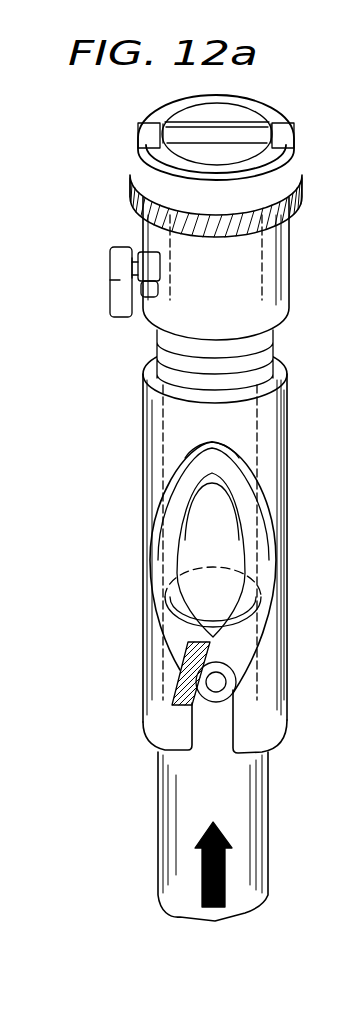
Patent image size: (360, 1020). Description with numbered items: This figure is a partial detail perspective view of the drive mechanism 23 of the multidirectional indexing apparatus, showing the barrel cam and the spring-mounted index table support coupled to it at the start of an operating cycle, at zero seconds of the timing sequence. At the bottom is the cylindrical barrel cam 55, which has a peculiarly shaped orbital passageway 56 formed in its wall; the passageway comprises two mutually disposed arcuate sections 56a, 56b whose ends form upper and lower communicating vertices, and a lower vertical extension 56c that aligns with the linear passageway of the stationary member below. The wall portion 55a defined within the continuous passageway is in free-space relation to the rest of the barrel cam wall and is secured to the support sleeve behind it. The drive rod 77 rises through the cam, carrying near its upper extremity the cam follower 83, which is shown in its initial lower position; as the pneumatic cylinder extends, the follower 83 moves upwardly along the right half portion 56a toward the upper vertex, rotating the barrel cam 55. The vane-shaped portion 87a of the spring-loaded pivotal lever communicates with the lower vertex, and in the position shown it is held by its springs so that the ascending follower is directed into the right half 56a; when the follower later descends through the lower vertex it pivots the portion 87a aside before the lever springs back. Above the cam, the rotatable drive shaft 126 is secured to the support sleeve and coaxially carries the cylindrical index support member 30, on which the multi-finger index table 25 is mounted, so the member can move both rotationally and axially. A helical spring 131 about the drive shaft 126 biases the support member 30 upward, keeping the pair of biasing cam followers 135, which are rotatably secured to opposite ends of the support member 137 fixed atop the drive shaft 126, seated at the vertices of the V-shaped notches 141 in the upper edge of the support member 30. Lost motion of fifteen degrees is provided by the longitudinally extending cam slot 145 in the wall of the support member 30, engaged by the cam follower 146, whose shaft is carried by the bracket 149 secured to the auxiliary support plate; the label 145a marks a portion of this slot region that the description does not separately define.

The drive mechanism 23 is at (136, 408).
The index table 25 is at (298, 183).
The index support member 30 is at (280, 228).
The barrel cam 55 is at (253, 415).
The wall portion 55a is at (203, 572).
The orbital passageway 56 is at (163, 471).
The arcuate section 56a is at (255, 540).
The arcuate section 56b is at (167, 543).
The lower vertical extension 56c is at (220, 725).
The drive rod 77 is at (232, 790).
The cam follower 83 is at (232, 683).
The vane-shaped portion 87a is at (175, 673).
The drive shaft 126 is at (263, 270).
The helical spring 131 is at (273, 340).
The biasing cam follower 135 is at (150, 130).
The support member 137 is at (220, 128).
The V-shaped notch 141 is at (140, 152).
The cam slot 145 is at (143, 290).
The thumb screw tip 145a is at (160, 287).
The cam follower 146 is at (148, 252).
The bracket 149 is at (118, 305).